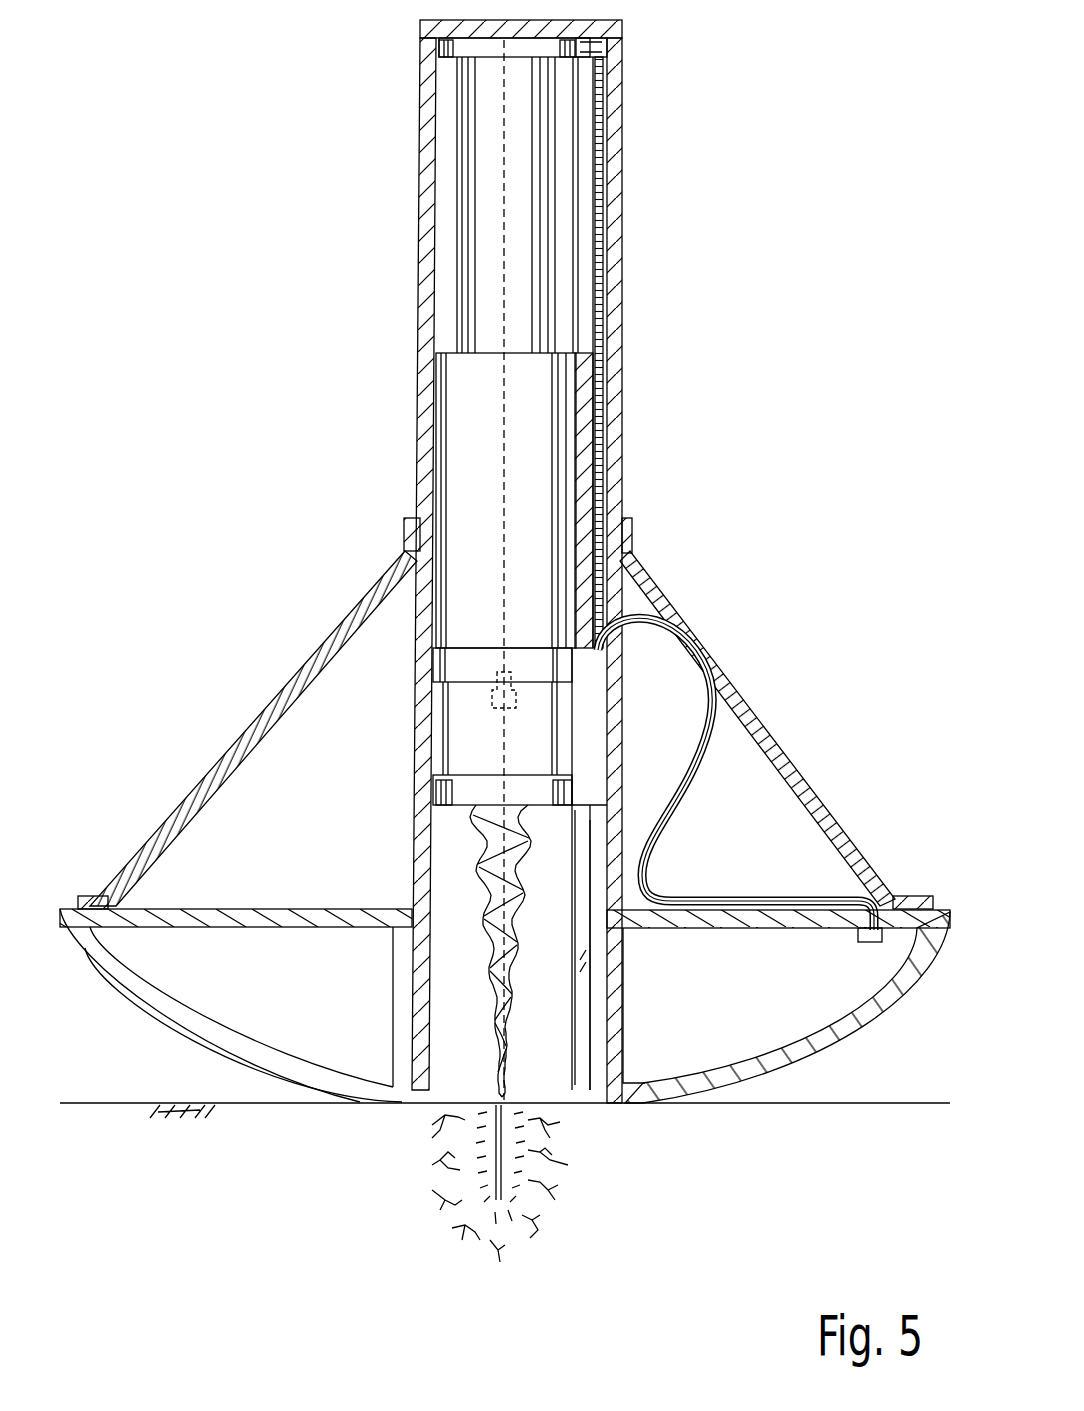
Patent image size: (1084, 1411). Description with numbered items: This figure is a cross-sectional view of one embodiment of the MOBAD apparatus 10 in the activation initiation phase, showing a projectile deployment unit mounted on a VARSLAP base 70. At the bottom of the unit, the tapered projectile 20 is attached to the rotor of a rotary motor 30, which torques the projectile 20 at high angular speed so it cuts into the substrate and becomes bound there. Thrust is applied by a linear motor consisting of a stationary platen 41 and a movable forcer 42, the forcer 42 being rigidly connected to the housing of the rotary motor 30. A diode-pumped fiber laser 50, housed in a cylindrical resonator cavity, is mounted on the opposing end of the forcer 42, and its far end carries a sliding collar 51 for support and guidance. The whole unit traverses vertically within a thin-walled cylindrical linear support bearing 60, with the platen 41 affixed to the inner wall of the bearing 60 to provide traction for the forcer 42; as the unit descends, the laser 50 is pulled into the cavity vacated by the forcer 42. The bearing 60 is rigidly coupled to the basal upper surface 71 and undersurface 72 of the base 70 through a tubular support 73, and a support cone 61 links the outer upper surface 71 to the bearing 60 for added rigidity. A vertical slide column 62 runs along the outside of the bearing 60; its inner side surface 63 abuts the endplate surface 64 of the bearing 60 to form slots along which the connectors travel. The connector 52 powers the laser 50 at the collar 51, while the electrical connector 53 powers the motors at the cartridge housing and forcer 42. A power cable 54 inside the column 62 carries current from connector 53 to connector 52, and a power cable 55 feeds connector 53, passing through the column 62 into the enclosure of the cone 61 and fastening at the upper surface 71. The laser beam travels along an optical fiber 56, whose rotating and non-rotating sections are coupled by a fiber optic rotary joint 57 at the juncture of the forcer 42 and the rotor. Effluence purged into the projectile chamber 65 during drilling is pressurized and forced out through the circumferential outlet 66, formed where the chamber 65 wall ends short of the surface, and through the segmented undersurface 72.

The MOBAD apparatus 10 is at (170, 553).
The projectile 20 is at (470, 872).
The rotary motor 30 is at (462, 742).
The stationary platen 41 is at (470, 428).
The movable forcer 42 is at (462, 660).
The diode-pumped fiber laser 50 is at (458, 158).
The sliding collar 51 is at (440, 46).
The connector 52 is at (598, 48).
The electrical connector 53 is at (600, 742).
The power cable 54 is at (600, 196).
The power cable 55 is at (676, 806).
The optical fiber 56 is at (512, 487).
The fiber optic rotary joint 57 is at (500, 706).
The linear support bearing 60 is at (505, 561).
The support cone 61 is at (232, 756).
The vertical slide column 62 is at (622, 302).
The inner side surface 63 is at (622, 990).
The endplate surface 64 is at (622, 1036).
The projectile chamber 65 is at (556, 1072).
The circumferential outlet 66 is at (600, 1105).
The VARSLAP base 70 is at (230, 1005).
The basal upper surface 71 is at (228, 926).
The undersurface 72 is at (252, 1052).
The tubular support 73 is at (400, 992).